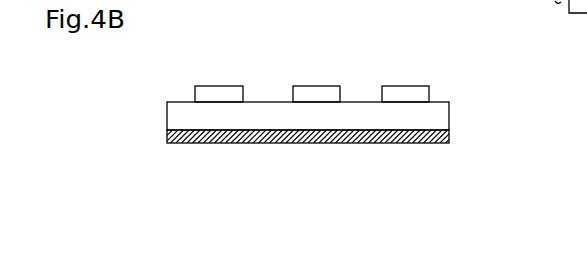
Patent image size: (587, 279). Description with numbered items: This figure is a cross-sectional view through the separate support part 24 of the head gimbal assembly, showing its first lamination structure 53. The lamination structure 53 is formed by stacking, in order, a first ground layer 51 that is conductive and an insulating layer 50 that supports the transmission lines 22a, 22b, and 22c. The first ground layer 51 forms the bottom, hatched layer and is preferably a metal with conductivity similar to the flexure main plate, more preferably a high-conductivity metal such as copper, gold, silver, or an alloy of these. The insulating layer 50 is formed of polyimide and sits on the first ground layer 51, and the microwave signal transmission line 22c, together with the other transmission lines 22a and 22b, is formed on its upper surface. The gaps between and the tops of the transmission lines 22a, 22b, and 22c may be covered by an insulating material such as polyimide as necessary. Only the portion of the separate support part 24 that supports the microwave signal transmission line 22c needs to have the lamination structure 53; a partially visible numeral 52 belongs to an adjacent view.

The first lamination structure 53 is at (77, 102).
The insulating layer 50 is at (175, 107).
The first ground layer 51 is at (166, 142).
The transmission line 22a is at (400, 85).
The transmission line 22b is at (313, 85).
The microwave signal transmission line 22c is at (212, 85).
The separate support part 24 is at (295, 163).
The element 52 is at (480, 3).